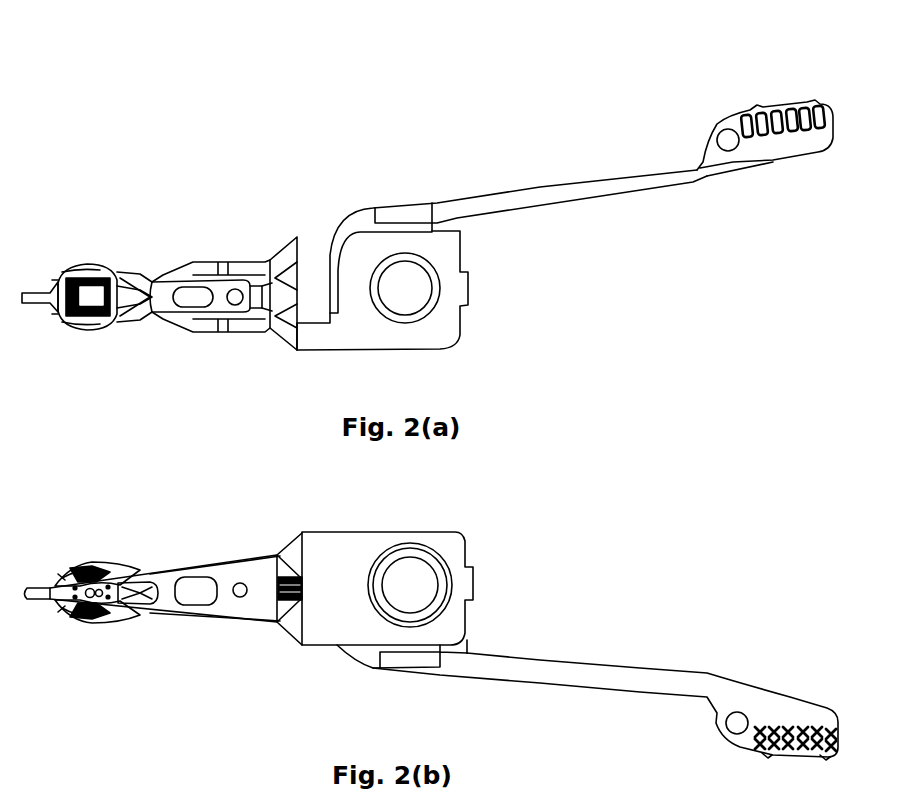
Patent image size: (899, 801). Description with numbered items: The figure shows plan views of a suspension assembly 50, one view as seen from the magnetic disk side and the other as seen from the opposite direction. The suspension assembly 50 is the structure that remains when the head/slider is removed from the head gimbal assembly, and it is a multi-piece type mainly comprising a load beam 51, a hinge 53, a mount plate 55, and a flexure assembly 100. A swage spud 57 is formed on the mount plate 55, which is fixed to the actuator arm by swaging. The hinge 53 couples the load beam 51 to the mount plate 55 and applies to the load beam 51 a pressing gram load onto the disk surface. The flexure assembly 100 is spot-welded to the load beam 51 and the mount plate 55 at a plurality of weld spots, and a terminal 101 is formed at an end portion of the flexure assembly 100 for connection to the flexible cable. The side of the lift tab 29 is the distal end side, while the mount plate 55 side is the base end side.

In FIG. 2B, the lift tab 29 is at (32, 598).
In FIG. 2A, the suspension assembly 50 is at (363, 140).
In FIG. 2B, the load beam 51 is at (212, 566).
In FIG. 2B, the hinge 53 is at (293, 555).
In FIG. 2B, the mount plate 55 is at (350, 530).
In FIG. 2B, the swage spud 57 is at (443, 557).
In FIG. 2B, the flexure assembly 100 is at (85, 549).
In FIG. 2A, the terminal 101 is at (768, 93).